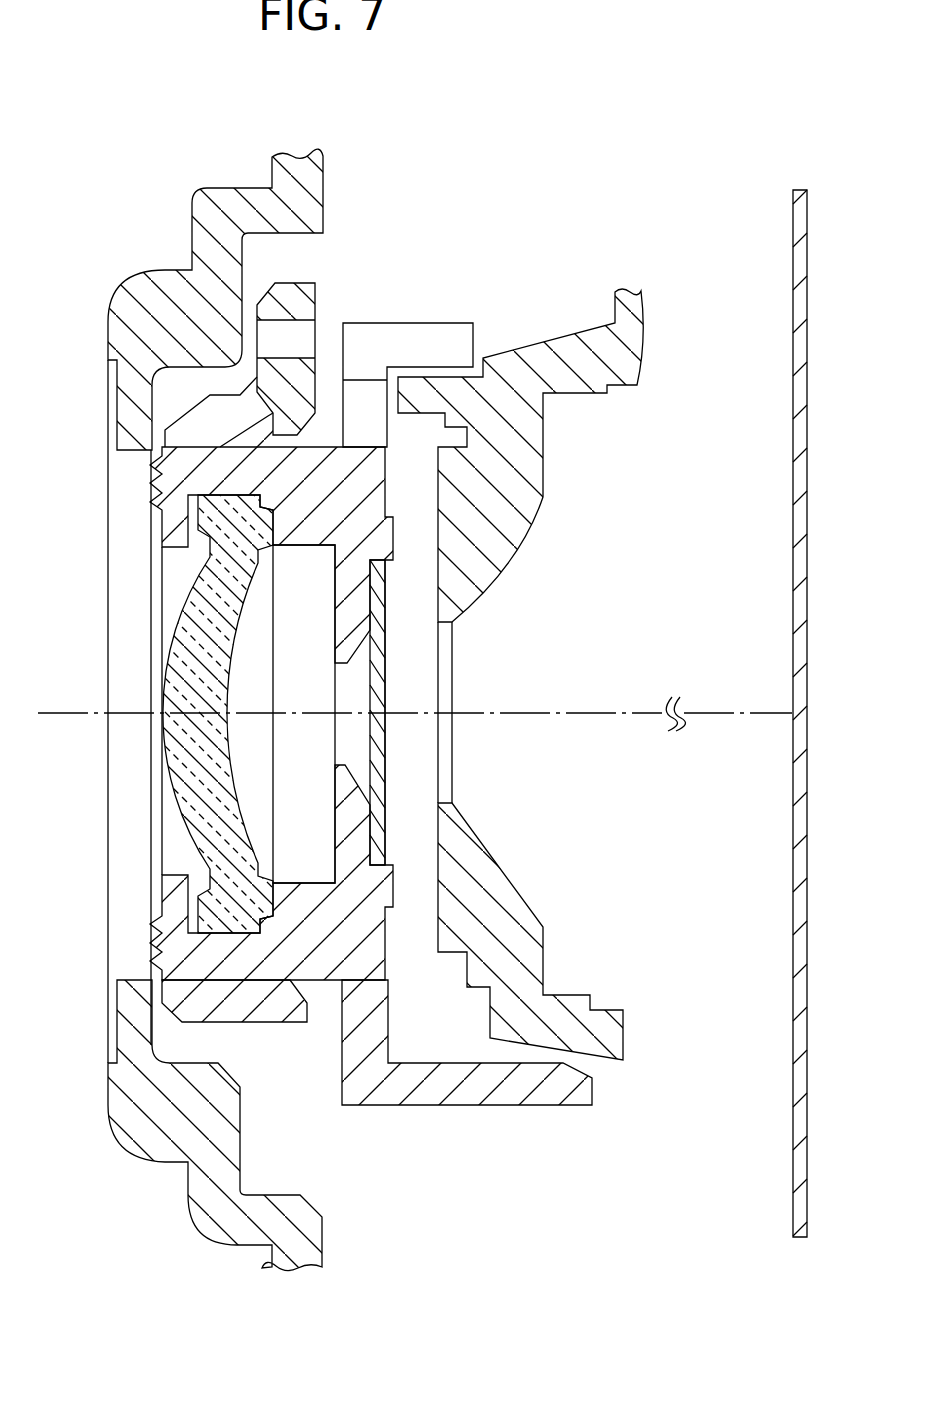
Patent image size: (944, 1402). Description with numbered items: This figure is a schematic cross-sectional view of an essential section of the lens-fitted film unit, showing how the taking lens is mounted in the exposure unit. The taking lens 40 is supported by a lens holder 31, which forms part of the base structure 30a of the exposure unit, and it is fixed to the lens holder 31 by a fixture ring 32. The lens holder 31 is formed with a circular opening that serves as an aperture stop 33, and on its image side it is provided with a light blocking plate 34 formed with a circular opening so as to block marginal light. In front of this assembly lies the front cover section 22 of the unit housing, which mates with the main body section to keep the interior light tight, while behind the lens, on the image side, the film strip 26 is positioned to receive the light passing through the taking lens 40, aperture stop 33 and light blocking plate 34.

The front cover section 22 is at (210, 190).
The film strip 26 is at (792, 232).
The base structure 30a is at (533, 347).
The lens holder 31 is at (507, 1105).
The fixture ring 32 is at (275, 1025).
The aperture stop 33 is at (345, 765).
The light blocking plate 34 is at (380, 795).
The taking lens 40 is at (178, 633).